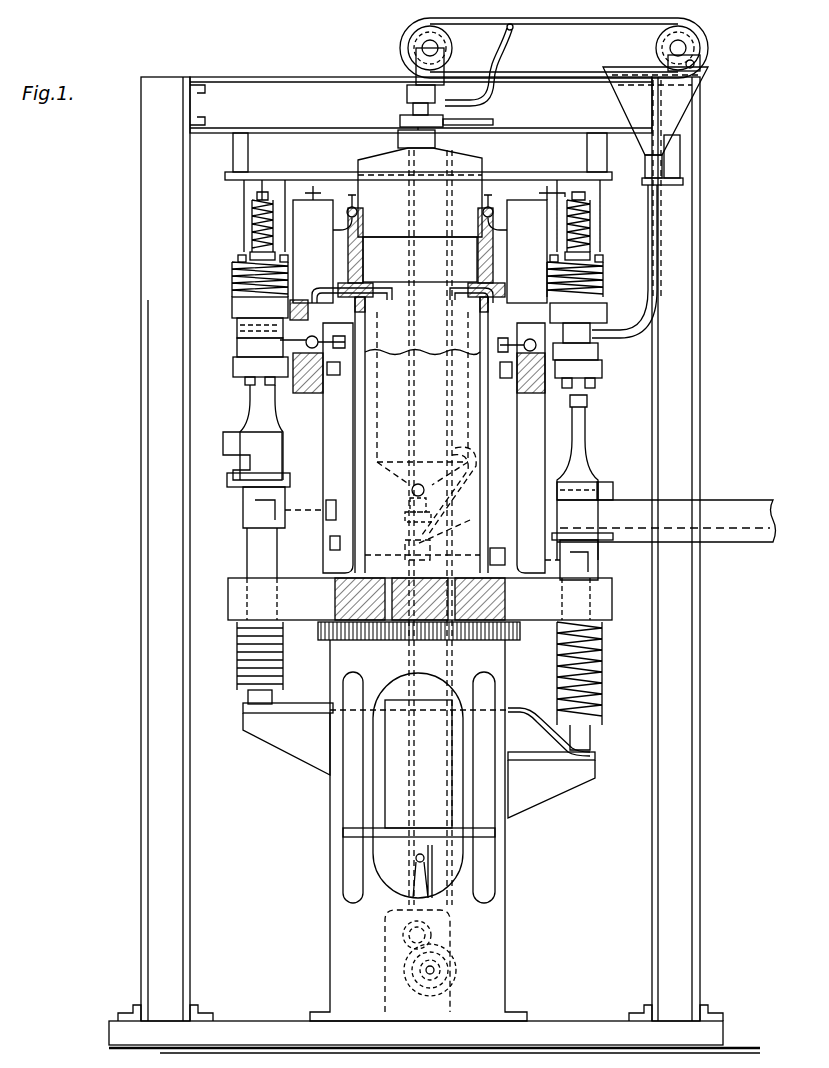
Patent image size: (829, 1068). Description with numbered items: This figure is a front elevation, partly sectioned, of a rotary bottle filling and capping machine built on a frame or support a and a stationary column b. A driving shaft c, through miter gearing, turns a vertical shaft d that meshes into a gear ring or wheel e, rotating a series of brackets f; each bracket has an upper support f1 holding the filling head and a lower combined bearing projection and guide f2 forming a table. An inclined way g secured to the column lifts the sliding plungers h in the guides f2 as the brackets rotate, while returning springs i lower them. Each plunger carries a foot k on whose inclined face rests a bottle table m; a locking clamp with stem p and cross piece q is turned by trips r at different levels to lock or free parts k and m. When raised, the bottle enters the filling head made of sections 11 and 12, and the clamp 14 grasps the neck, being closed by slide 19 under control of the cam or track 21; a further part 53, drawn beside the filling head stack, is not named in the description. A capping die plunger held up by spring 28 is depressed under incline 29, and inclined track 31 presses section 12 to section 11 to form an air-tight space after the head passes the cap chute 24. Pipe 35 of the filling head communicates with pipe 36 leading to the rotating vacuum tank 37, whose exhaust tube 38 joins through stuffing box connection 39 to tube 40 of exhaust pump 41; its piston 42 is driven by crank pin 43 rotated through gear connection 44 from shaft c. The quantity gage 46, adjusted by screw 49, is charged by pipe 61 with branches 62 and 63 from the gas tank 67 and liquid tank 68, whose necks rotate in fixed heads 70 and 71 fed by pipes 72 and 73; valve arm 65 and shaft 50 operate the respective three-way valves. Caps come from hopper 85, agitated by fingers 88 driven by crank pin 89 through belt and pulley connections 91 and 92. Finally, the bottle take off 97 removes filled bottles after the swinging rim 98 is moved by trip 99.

The filling head section 11 is at (233, 368).
The filling head section 12 is at (237, 345).
The clamp 14 is at (245, 385).
The slide 19 is at (505, 378).
The cam or track 21 is at (345, 378).
The cap chute 24 is at (600, 345).
The spring 28 is at (252, 226).
The chamfer or incline 29 is at (258, 193).
The inclined track 31 is at (245, 258).
The pipe 35 is at (419, 472).
The pipe 36 is at (450, 292).
The vacuum tank 37 is at (421, 435).
The exhaust tube 38 is at (480, 485).
The stuffing box connection 39 is at (480, 510).
The tube 40 is at (419, 785).
The exhaust pump 41 is at (419, 768).
The plunger or piston 42 is at (416, 858).
The crank pin or connection 43 is at (403, 936).
The gear connection 44 is at (410, 950).
The quantity gage 46 is at (420, 251).
The screw 49 is at (537, 194).
The shaft 50 is at (514, 333).
The plate 53 is at (237, 326).
The pipe 61 is at (340, 230).
The branch 62 is at (421, 252).
The branch 63 is at (358, 214).
The arm 65 is at (430, 189).
The gas tank 67 is at (420, 259).
The liquid tank 68 is at (420, 192).
The fixed head 70 is at (407, 92).
The fixed head 71 is at (413, 103).
The pipe 72 is at (486, 122).
The pipe 73 is at (496, 47).
The hopper 85 is at (690, 100).
The fingers or pushers 88 is at (648, 157).
The eccentric or crank pin 89 is at (696, 62).
The belt 91 is at (510, 848).
The pulley 92 is at (408, 42).
The bottle take off 97 is at (722, 502).
The rim or swinging arm 98 is at (240, 437).
The trip 99 is at (606, 482).
The frame or support a is at (434, 565).
The stationary column b is at (480, 450).
The driving shaft c is at (436, 970).
The vertical shaft d is at (428, 871).
The gear ring or wheel e is at (426, 635).
The bracket f is at (419, 310).
The support f1 is at (237, 365).
The combined bearing projection and guide f2 is at (228, 595).
The inclined way g is at (243, 710).
The sliding rod or plunger h is at (247, 555).
The returning spring i is at (237, 655).
The foot k is at (243, 515).
The bottle table m is at (240, 482).
The stem p is at (328, 500).
The cross piece q is at (329, 545).
The trip r is at (460, 506).